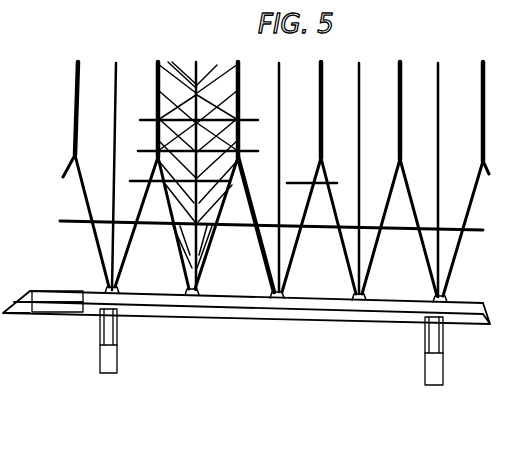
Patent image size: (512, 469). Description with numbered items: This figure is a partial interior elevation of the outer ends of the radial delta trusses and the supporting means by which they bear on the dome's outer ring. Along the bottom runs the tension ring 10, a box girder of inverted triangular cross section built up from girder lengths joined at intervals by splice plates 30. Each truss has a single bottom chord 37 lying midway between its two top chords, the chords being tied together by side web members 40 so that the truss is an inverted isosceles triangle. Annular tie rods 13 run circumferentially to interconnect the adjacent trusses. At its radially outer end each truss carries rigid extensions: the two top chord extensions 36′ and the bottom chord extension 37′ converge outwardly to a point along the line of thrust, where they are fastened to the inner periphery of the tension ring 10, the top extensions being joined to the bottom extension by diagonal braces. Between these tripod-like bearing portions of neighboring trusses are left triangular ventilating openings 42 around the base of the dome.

The tension ring 10 is at (326, 312).
The annular tie rods 13 is at (142, 118).
The splice plates 30 is at (72, 274).
The top chord extensions 36′ is at (89, 233).
The bottom chord 37 is at (442, 112).
The bottom chord extension 37′ is at (123, 234).
The side web members 40 is at (234, 125).
The triangular ventilating openings 42 is at (160, 268).